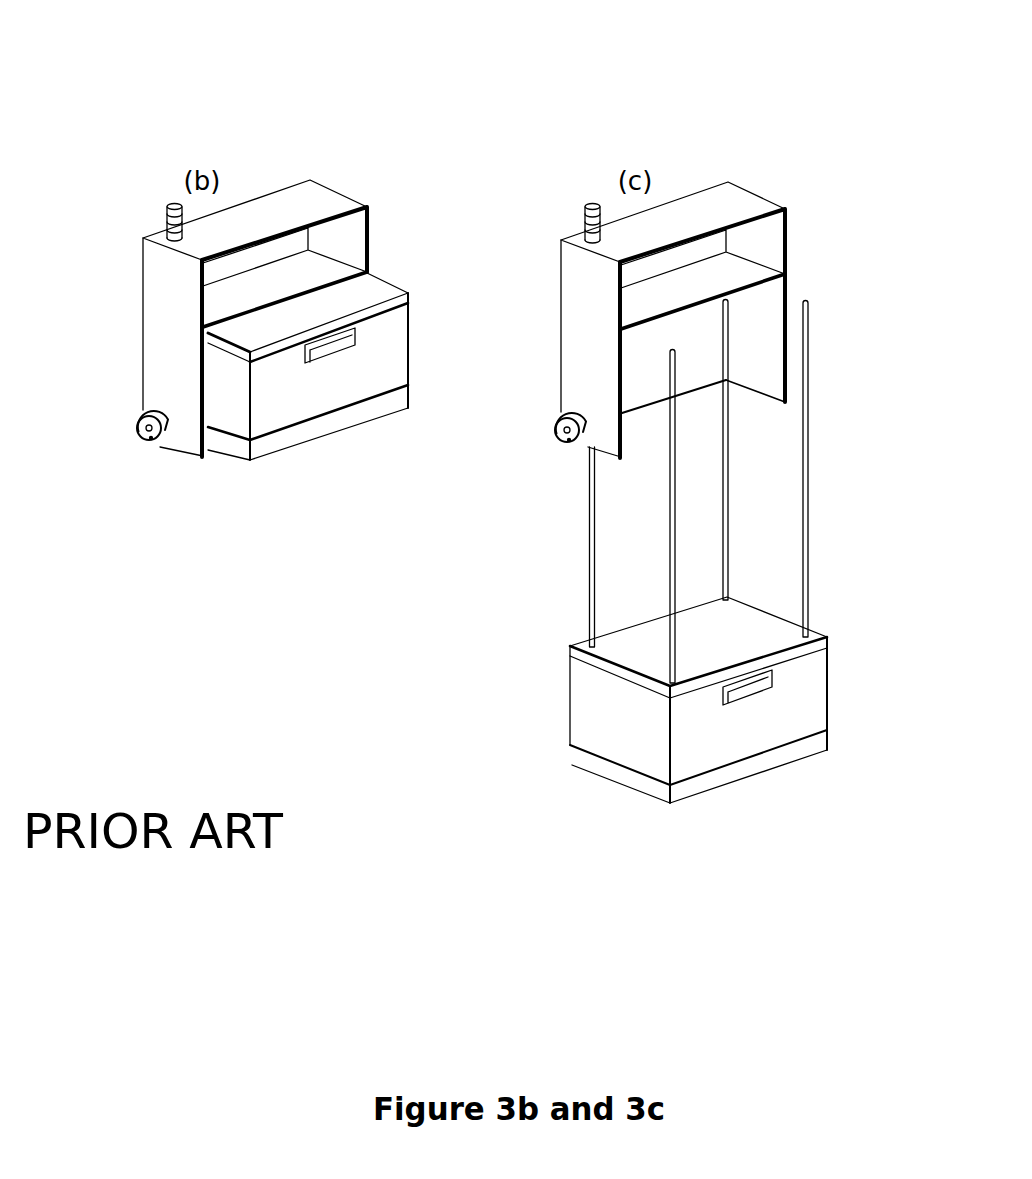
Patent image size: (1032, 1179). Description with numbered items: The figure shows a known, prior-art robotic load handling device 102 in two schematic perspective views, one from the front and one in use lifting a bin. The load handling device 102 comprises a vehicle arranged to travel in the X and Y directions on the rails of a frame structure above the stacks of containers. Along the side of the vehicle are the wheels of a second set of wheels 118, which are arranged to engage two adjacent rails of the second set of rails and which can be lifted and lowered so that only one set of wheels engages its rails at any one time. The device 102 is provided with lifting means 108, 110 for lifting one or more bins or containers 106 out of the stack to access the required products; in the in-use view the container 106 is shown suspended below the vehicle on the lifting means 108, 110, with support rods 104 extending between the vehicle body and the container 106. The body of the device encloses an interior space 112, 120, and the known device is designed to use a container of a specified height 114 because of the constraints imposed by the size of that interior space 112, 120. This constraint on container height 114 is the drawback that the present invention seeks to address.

In FIG. 3B, the load handling device 102 is at (330, 132).
In FIG. 3C, the load handling device 102 is at (740, 130).
In FIG. 3C, the support rod 104 is at (715, 620).
In FIG. 3B, the container 106 is at (297, 390).
In FIG. 3C, the container 106 is at (763, 730).
In FIG. 3C, the lifting means 108 is at (587, 593).
In FIG. 3C, the lifting means 110 is at (633, 682).
In FIG. 3B, the interior space 112 is at (413, 208).
In FIG. 3C, the interior space 112 is at (831, 208).
In FIG. 3B, the specified height of container 114 is at (413, 280).
In FIG. 3C, the specified height of container 114 is at (831, 280).
In FIG. 3B, the second set of wheels 118 is at (152, 440).
In FIG. 3C, the second set of wheels 118 is at (570, 442).
In FIG. 3B, the interior space 120 is at (203, 390).
In FIG. 3C, the interior space 120 is at (662, 342).